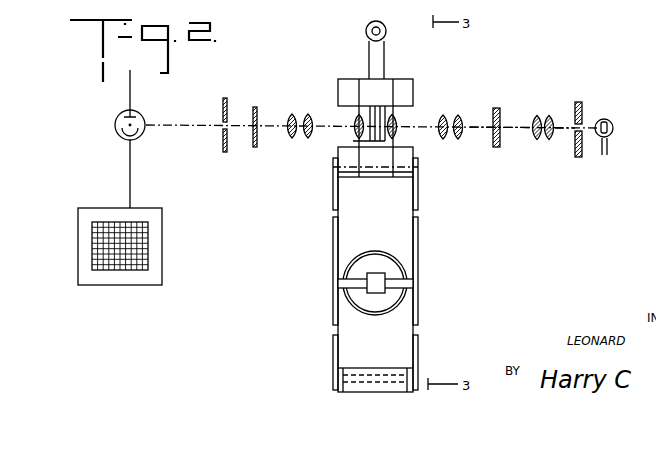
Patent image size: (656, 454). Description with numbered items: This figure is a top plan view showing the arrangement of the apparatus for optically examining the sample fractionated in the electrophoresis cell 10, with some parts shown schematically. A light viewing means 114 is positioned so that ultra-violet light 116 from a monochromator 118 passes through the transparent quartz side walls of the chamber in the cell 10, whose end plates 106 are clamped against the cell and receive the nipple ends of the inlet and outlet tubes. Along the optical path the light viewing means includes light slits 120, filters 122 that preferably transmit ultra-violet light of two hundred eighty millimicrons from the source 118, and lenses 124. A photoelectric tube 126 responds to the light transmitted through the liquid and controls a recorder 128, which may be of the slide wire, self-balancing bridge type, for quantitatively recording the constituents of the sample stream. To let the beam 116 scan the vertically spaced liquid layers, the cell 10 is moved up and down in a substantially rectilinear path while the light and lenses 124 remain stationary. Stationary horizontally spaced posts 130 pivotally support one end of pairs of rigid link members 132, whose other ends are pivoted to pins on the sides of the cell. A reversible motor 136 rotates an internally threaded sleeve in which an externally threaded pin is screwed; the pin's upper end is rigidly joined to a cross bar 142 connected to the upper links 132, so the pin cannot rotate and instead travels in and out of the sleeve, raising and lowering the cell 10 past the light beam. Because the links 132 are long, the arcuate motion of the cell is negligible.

The electrophoresis cell 10 is at (365, 223).
The end plates 106 is at (383, 141).
The light viewing means 114 is at (502, 108).
The ultra-violet light beam 116 is at (567, 128).
The monochromator 118 is at (613, 127).
The light slits 120 is at (222, 106).
The filters 122 is at (253, 150).
The lenses 124 is at (300, 134).
The photoelectric tube 126 is at (121, 132).
The recorder 128 is at (84, 277).
The stationary posts 130 is at (407, 393).
The rigid link members 132 is at (332, 258).
The reversible motor 136 is at (378, 303).
The cross bar 142 is at (356, 281).